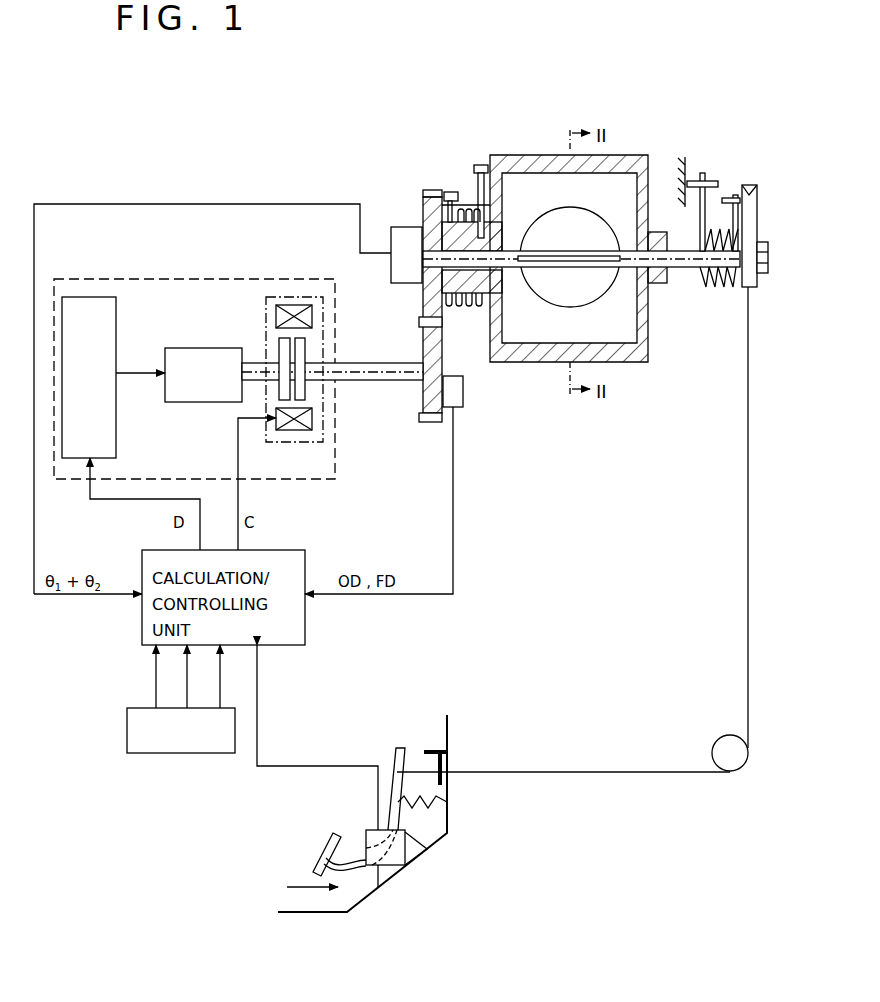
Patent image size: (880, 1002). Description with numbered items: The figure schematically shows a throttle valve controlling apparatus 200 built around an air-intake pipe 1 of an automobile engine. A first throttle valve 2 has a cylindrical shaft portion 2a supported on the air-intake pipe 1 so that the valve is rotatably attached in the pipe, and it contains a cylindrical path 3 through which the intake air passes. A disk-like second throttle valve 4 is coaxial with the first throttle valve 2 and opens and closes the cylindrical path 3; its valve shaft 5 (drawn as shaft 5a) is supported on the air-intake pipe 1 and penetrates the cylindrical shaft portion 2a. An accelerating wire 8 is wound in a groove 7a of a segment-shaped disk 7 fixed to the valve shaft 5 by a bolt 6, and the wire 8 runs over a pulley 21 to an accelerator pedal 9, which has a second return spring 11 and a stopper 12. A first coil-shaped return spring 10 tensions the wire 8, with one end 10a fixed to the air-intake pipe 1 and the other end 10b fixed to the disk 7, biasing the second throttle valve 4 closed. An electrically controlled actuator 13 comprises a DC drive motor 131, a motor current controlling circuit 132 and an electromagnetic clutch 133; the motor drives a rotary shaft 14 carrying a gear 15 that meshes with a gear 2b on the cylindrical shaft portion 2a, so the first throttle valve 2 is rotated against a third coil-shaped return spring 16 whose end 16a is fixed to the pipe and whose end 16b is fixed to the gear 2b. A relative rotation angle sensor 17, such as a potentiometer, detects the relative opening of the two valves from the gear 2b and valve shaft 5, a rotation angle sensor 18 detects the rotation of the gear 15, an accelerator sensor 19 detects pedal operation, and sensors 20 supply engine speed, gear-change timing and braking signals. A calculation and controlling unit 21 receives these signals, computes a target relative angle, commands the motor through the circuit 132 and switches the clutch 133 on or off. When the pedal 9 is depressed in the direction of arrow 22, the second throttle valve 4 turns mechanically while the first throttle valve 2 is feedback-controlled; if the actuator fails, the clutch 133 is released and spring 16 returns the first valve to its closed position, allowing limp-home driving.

The air-intake pipe 1 is at (620, 358).
The first throttle valve 2 is at (515, 340).
The cylindrical shaft portion 2a is at (475, 218).
The gear 2b is at (422, 207).
The cylindrical path 3 is at (553, 295).
The second throttle valve 4 is at (592, 275).
The valve shaft 5 is at (553, 245).
The throttle shaft 5a is at (738, 290).
The bolt 6 is at (768, 260).
The segment-shaped disk 7 is at (756, 188).
The groove 7a is at (748, 185).
The accelerating wire 8 is at (746, 484).
The accelerator pedal 9 is at (330, 842).
The first coil-shaped return spring 10 is at (715, 287).
The one end of return spring 10a is at (703, 173).
The other end of return spring 10b is at (740, 222).
The second return spring 11 is at (447, 835).
The stopper 12 is at (430, 752).
The electrically controlled actuator 13 is at (250, 280).
The rotary shaft 14 is at (365, 380).
The gear 15 is at (420, 395).
The third coil-shaped return spring 16 is at (470, 296).
The one end of return spring 16a is at (483, 166).
The other end of return spring 16b is at (450, 191).
The relative rotation angle sensor 17 is at (402, 270).
The rotation angle sensor 18 is at (463, 395).
The accelerator sensor 19 is at (370, 843).
The sensors 20 is at (163, 755).
The calculation and controlling unit 21 is at (718, 752).
The arrow 22 is at (305, 877).
The DC drive motor 131 is at (180, 348).
The motor current controlling circuit 132 is at (100, 297).
The electromagnetic clutch 133 is at (305, 445).
The throttle valve controlling apparatus 200 is at (502, 100).